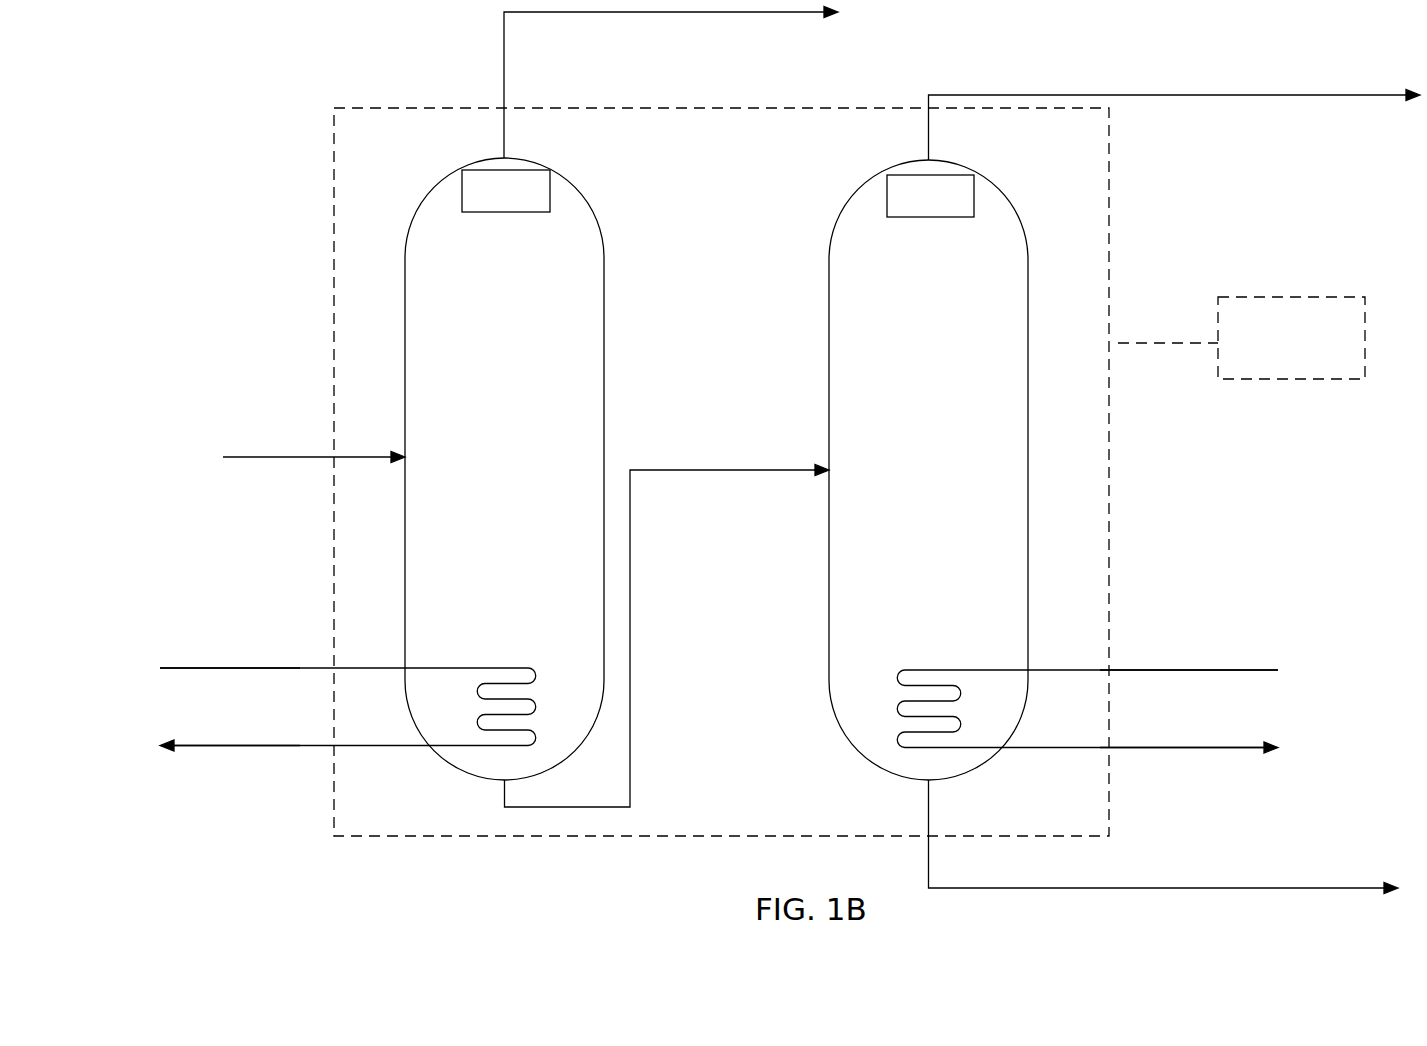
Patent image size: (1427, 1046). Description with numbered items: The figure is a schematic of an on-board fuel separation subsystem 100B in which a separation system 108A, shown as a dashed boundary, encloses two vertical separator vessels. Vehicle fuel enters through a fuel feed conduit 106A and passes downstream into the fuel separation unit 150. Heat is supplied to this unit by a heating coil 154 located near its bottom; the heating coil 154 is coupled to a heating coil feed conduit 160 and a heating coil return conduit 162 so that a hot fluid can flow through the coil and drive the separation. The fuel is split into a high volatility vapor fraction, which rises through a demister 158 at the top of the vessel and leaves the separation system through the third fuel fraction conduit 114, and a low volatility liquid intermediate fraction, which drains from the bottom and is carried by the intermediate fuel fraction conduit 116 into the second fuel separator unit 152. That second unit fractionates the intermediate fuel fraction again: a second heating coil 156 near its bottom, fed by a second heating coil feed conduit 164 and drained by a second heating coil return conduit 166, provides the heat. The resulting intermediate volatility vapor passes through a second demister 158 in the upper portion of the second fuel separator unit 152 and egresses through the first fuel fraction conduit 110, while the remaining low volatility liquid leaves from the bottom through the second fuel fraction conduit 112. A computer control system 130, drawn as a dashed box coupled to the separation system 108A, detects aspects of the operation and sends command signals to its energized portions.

The on-board fuel separation subsystem 100B is at (291, 169).
The separation system 108A is at (337, 334).
The fuel feed conduit 106A is at (263, 458).
The first fuel fraction conduit 110 is at (1175, 125).
The second fuel fraction conduit 112 is at (1164, 853).
The third fuel fraction conduit 114 is at (674, 83).
The intermediate fuel fraction conduit 116 is at (667, 636).
The computer control system 130 is at (1241, 338).
The fuel separation unit 150 is at (504, 469).
The second fuel separator unit 152 is at (928, 470).
The heating coil 154 is at (348, 679).
The second heating coil 156 is at (1087, 686).
The demister 158 is at (718, 193).
The heating coil feed conduit 160 is at (209, 670).
The heating coil return conduit 162 is at (207, 747).
The second heating coil feed conduit 164 is at (1213, 670).
The second heating coil return conduit 166 is at (1213, 747).